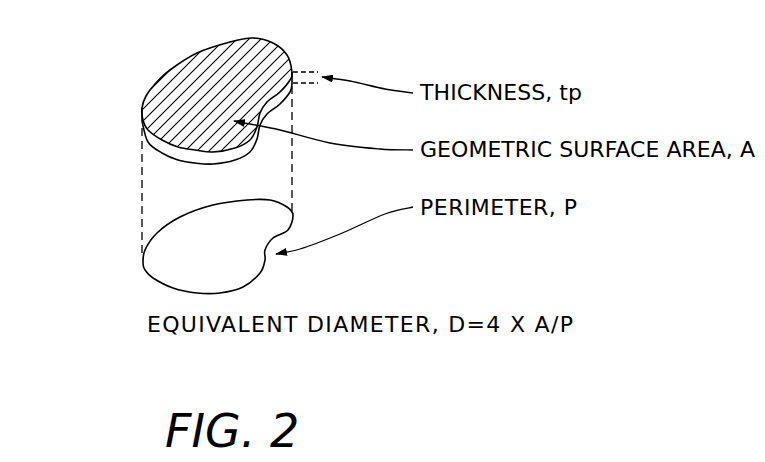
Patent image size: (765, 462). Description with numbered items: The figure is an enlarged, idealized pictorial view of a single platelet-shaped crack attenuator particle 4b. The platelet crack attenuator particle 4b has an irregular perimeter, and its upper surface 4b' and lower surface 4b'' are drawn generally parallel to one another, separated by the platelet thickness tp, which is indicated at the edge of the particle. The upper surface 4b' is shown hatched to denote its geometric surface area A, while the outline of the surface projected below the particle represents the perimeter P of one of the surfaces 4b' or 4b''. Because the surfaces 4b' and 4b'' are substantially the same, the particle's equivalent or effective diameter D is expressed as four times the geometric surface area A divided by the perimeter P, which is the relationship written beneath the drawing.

The platelet crack attenuator particle 4b is at (222, 222).
The platelet upper surface 4b' is at (222, 222).
The platelet lower surface 4b'' is at (177, 141).